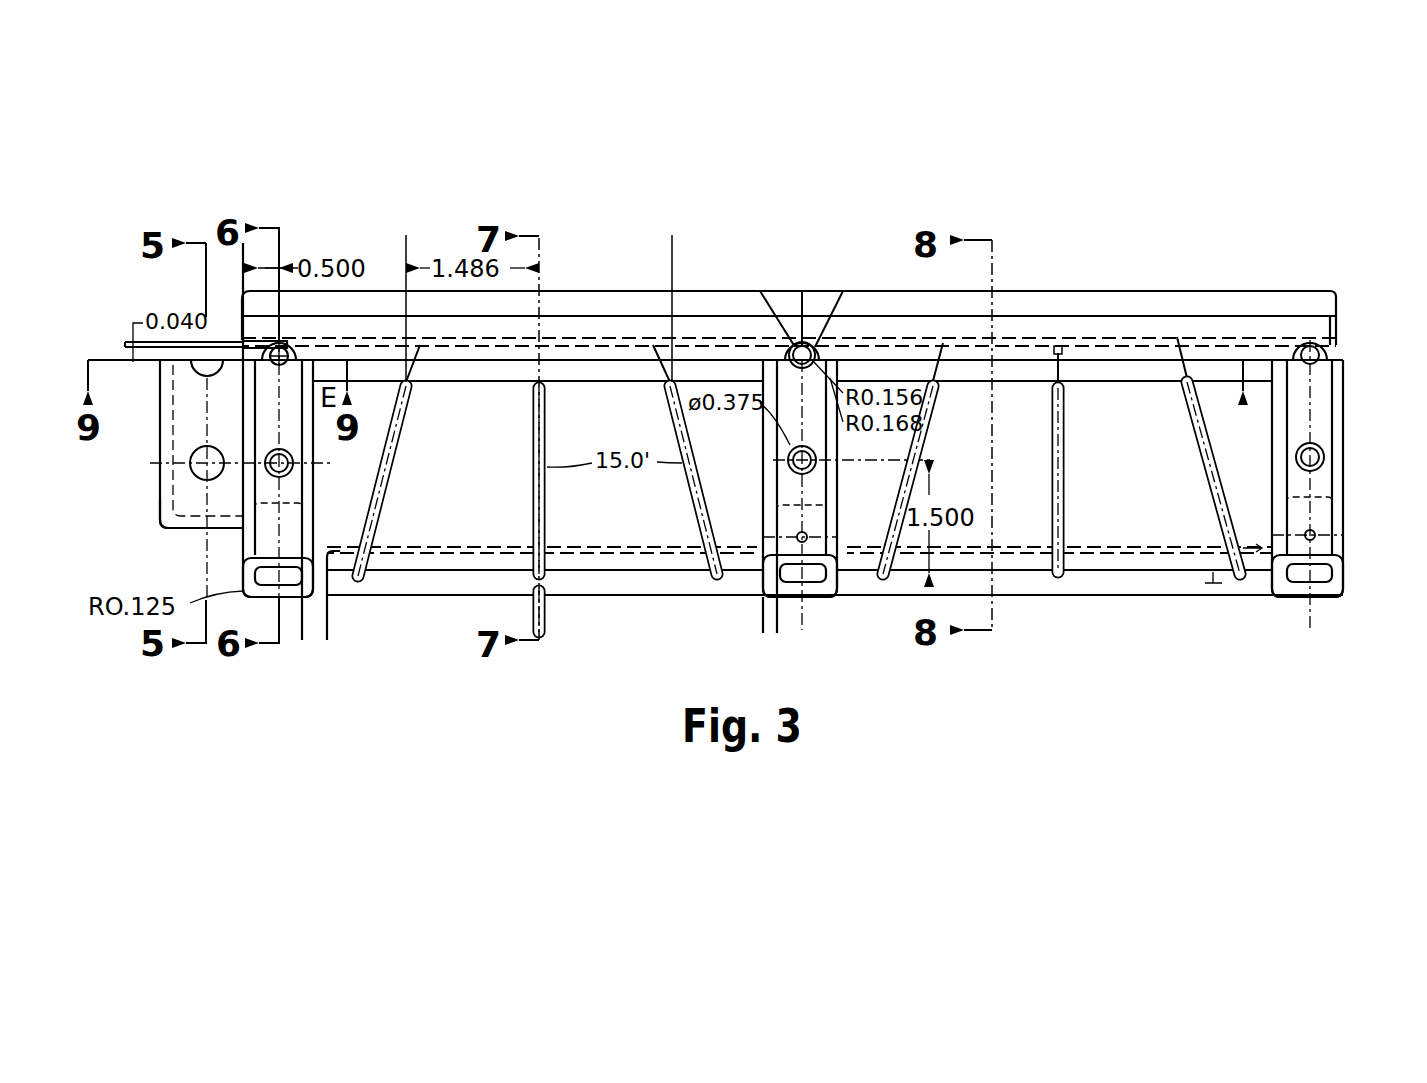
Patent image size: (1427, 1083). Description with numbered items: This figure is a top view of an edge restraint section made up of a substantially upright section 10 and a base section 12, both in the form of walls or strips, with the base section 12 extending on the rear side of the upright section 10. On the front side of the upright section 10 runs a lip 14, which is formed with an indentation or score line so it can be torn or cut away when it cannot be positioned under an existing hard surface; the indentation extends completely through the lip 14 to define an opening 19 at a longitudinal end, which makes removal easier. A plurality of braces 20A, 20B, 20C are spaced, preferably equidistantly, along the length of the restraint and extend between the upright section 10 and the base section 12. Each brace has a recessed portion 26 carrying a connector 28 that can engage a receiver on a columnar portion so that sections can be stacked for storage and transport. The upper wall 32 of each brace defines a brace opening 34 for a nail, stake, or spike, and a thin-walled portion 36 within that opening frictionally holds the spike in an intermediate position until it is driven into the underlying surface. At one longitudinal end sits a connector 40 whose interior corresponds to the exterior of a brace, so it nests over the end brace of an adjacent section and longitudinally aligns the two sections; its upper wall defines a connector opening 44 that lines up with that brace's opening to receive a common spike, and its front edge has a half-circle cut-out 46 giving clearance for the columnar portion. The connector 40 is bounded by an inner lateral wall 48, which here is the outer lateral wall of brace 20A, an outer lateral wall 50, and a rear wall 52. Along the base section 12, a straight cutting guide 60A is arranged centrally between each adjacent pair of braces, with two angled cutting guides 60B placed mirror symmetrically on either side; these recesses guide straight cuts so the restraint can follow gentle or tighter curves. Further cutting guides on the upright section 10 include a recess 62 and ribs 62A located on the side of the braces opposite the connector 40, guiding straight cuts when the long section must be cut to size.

The upright section 10 is at (590, 340).
The base section 12 is at (1123, 527).
The lip 14 is at (1152, 300).
The opening 19 is at (246, 343).
The brace 20A is at (292, 495).
The brace 20B is at (828, 512).
The brace 20C is at (1322, 430).
The recessed portion 26 is at (790, 522).
The connector 28 is at (797, 537).
The upper wall 32 is at (1327, 398).
The brace opening 34 is at (1297, 452).
The thin-walled portion 36 is at (1297, 462).
The connector 40 is at (172, 417).
The connector opening 44 is at (195, 472).
The half-circle cut-out 46 is at (127, 347).
The inner lateral wall 48 is at (247, 418).
The outer lateral wall 50 is at (166, 462).
The rear wall 52 is at (196, 523).
The straight cutting guide 60A is at (535, 498).
The angled cutting guide 60B is at (383, 503).
The cutting guide 62 is at (835, 362).
The cutting guide 62A is at (1058, 346).